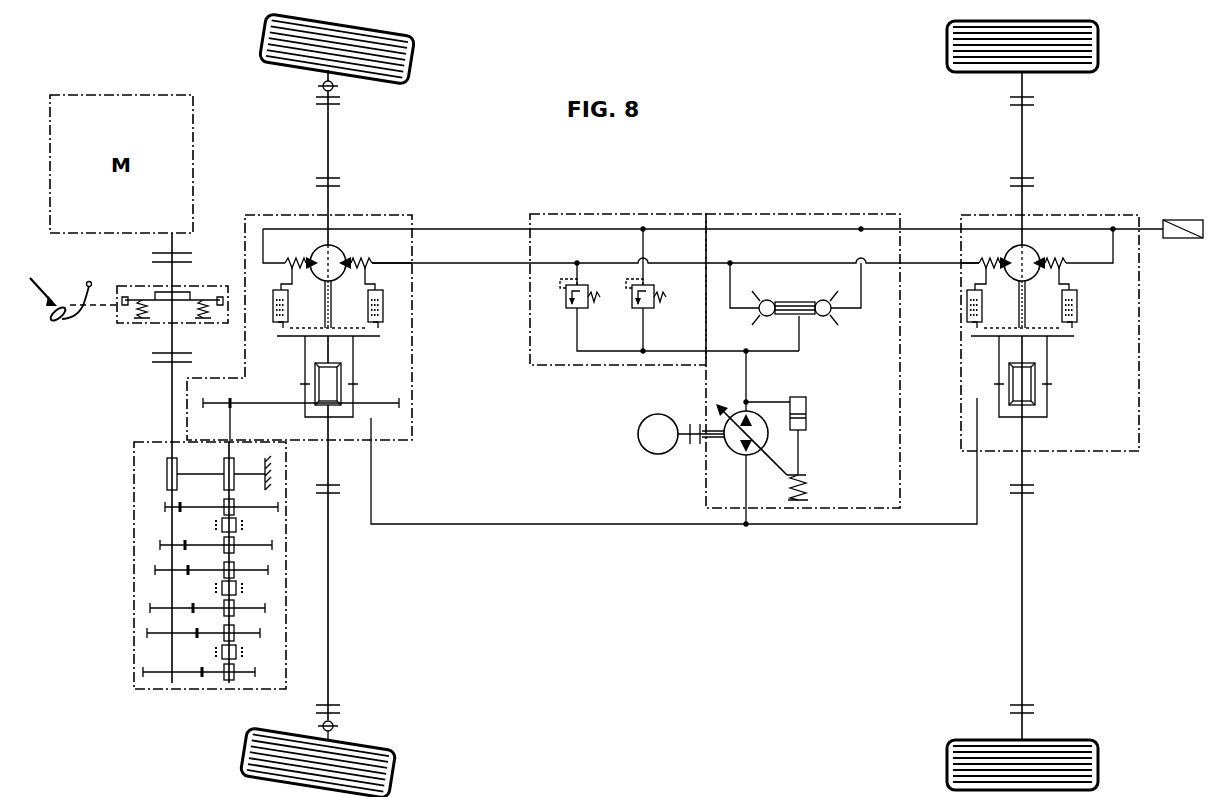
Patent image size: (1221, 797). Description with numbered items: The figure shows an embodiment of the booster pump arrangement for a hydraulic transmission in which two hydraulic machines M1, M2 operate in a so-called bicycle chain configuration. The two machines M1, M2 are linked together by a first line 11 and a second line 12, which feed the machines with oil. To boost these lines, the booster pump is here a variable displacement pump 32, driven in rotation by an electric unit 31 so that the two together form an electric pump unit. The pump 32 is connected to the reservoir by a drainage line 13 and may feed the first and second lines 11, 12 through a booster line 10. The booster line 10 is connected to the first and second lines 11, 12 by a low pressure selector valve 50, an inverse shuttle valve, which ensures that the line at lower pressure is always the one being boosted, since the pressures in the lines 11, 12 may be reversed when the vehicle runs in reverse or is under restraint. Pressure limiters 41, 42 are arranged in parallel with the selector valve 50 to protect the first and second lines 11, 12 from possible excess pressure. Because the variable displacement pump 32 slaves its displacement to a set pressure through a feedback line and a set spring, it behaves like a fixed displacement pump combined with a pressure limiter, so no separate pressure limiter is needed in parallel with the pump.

The booster line 10 is at (748, 367).
The first line 11 is at (432, 265).
The second line 12 is at (430, 228).
The drainage line 13 is at (661, 525).
The electric unit 31 is at (638, 432).
The variable displacement pump 32 is at (737, 457).
The pressure limiter 41 is at (566, 310).
The pressure limiter 42 is at (632, 310).
The low pressure selector valve 50 is at (822, 322).
The hydraulic machine M1 is at (343, 251).
The hydraulic machine M2 is at (1037, 251).